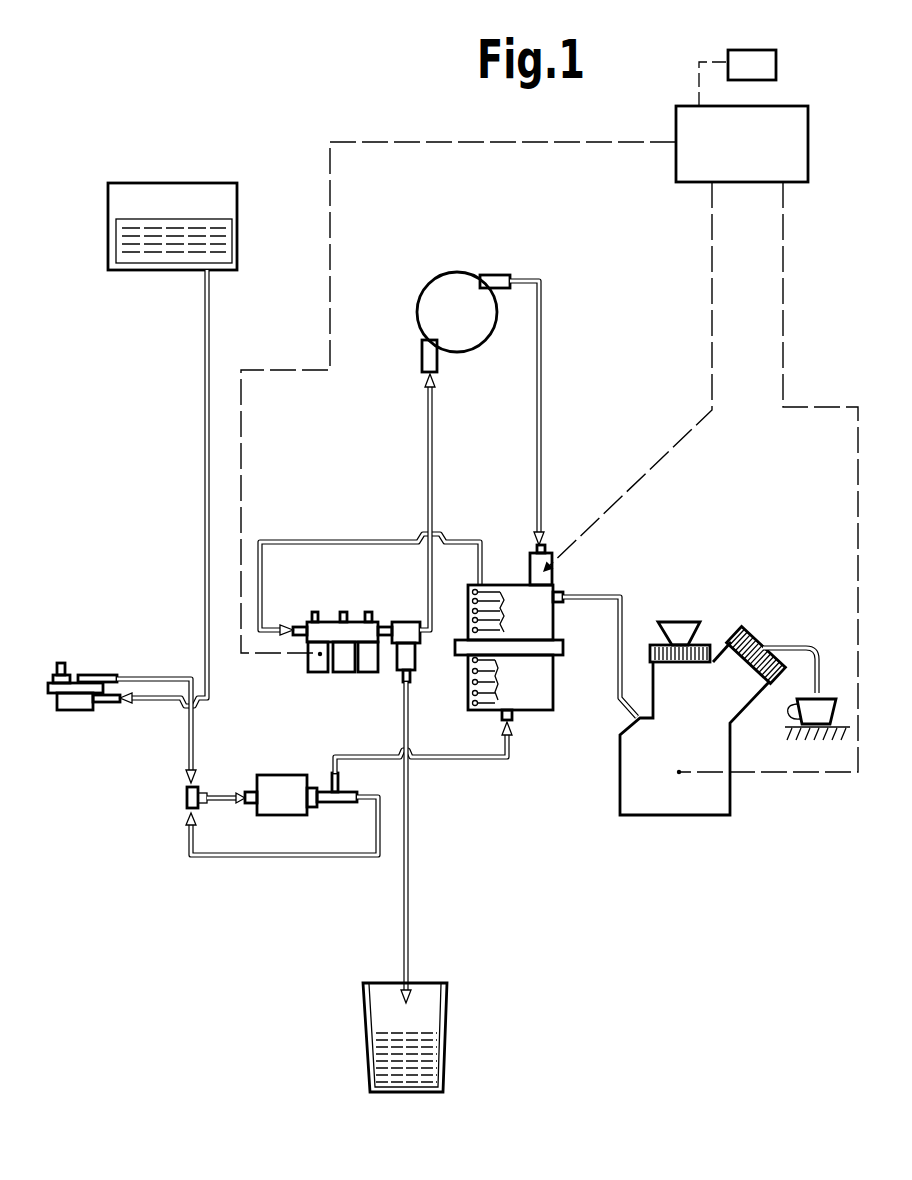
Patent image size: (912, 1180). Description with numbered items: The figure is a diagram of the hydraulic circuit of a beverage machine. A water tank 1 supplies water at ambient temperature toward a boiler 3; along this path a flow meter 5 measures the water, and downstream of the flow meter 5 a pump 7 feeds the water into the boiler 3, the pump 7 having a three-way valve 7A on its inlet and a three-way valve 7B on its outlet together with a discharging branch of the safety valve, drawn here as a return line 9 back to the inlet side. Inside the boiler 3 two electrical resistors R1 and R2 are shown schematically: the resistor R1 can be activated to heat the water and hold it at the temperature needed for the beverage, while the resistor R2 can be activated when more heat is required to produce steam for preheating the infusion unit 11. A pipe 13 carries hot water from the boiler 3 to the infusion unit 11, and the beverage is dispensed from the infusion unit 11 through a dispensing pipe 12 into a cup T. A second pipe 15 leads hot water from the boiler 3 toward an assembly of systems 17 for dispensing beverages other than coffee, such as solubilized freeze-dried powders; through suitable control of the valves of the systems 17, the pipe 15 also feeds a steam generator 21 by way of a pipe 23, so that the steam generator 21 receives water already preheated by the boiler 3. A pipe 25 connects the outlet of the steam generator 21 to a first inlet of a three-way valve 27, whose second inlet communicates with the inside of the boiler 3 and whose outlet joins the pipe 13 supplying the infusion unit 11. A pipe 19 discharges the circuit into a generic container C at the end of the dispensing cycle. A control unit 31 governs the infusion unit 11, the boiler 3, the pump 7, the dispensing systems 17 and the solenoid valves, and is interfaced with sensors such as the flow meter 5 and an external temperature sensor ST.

The water tank 1 is at (125, 228).
The boiler 3 is at (498, 672).
The flow meter 5 is at (80, 708).
The pump 7 is at (285, 783).
The three-way valve 7A is at (185, 798).
The three-way valve 7B is at (342, 803).
The return line 9 is at (230, 857).
The infusion unit 11 is at (736, 621).
The pipe for dispensing the beverage 12 is at (795, 640).
The pipe to supply hot water 13 is at (618, 656).
The second pipe 15 is at (465, 541).
The assembly of systems to dispense beverages other than coffee 17 is at (403, 630).
The pipe for discharging the circuit 19 is at (410, 898).
The steam generator 21 is at (440, 292).
The pipe 23 is at (432, 442).
The pipe 25 is at (541, 435).
The three-way valve 27 is at (560, 568).
The control unit 31 is at (692, 162).
The external temperature sensor ST is at (777, 50).
The cup T is at (797, 712).
The container C is at (443, 1032).
The electrical resistor R1 is at (473, 686).
The electrical resistor R2 is at (470, 598).